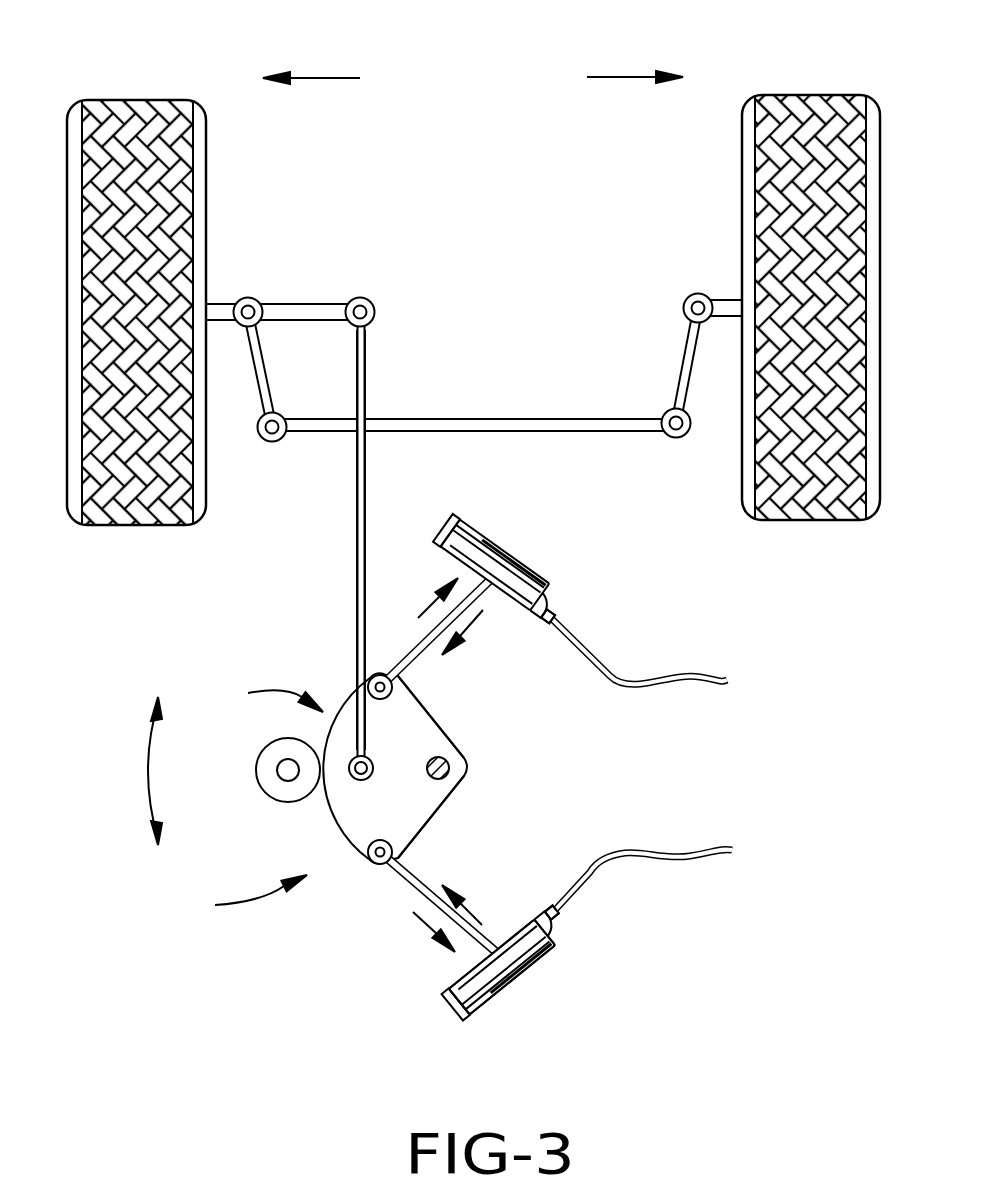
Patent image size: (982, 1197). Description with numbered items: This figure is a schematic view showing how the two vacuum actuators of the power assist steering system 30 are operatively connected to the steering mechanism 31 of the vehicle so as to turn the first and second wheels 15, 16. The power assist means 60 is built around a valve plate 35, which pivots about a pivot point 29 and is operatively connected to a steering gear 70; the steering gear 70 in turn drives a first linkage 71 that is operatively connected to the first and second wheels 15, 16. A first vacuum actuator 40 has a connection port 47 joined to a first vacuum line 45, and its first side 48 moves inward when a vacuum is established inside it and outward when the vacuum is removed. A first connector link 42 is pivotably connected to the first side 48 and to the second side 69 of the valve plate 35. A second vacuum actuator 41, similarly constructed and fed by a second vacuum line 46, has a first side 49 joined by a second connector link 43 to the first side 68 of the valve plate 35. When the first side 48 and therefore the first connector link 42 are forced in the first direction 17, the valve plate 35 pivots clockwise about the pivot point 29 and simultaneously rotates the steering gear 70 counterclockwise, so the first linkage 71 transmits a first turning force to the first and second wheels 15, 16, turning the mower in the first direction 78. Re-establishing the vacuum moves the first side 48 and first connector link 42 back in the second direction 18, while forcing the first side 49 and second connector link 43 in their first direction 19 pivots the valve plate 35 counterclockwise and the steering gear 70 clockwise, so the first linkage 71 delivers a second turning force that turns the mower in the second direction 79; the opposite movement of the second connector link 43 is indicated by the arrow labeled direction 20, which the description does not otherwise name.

The first wheel 15 is at (205, 156).
The second wheel 16 is at (748, 149).
The first direction 17 is at (472, 912).
The second direction 18 is at (426, 930).
The first direction 19 is at (468, 628).
The extension direction of upper piston rod 20 is at (432, 602).
The pivot point 29 is at (448, 765).
The power assist steering system 30 is at (242, 897).
The steering mechanism 31 is at (325, 564).
The valve plate 35 is at (348, 820).
The first vacuum actuator 40 is at (503, 983).
The second vacuum actuator 41 is at (500, 552).
The first connector link 42 is at (411, 892).
The second connector link 43 is at (412, 653).
The first vacuum line 45 is at (630, 856).
The second vacuum line 46 is at (637, 680).
The connection port 47 is at (553, 918).
The first side 48 is at (503, 923).
The first side 49 is at (505, 612).
The power assist means 60 is at (268, 695).
The first side 68 is at (445, 700).
The second side 69 is at (445, 840).
The steering gear 70 is at (268, 765).
The first linkage 71 is at (362, 368).
The first direction 78 is at (620, 77).
The second direction 79 is at (325, 77).